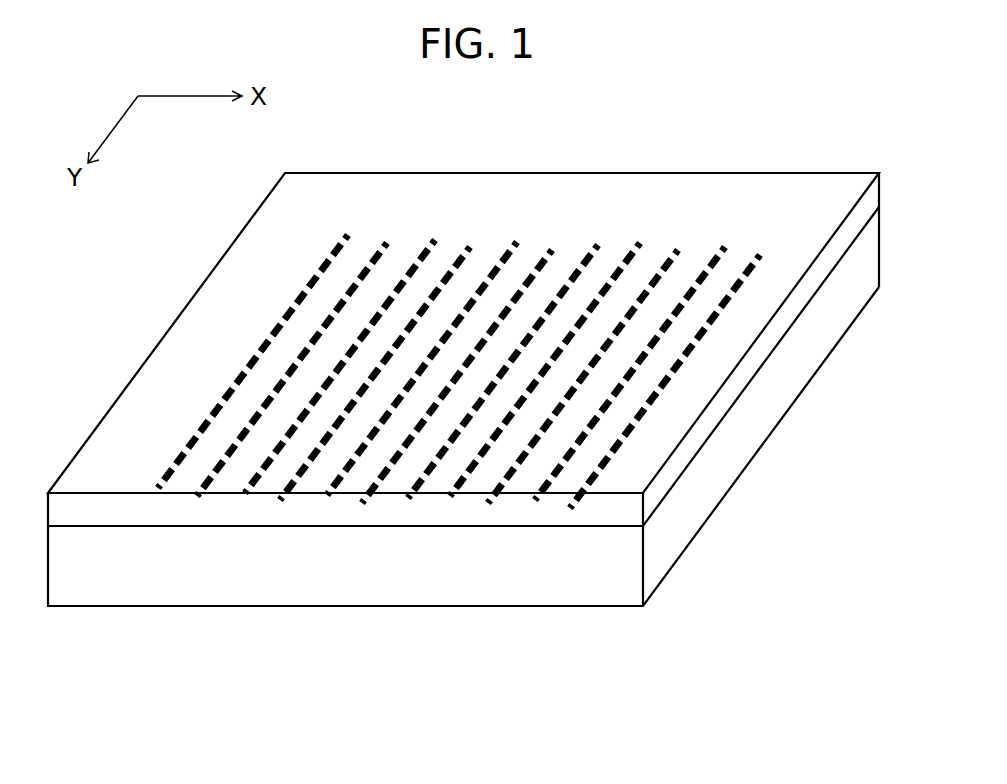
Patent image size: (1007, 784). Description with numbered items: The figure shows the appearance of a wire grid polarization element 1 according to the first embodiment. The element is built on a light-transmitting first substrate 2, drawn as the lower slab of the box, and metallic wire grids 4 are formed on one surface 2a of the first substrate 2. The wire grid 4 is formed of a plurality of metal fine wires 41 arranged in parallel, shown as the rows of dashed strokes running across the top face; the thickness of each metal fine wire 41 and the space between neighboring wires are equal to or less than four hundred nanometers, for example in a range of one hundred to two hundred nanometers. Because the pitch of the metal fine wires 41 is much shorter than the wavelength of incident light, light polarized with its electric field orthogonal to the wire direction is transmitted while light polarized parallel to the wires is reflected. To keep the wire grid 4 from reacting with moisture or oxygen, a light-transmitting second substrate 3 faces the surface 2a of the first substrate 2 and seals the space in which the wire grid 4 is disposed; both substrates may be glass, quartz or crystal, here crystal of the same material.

The wire grid polarization element 1 is at (858, 163).
The first substrate 2 is at (622, 578).
The one surface of the first substrate 2a is at (537, 527).
The second substrate 3 is at (683, 190).
The wire grid 4 is at (350, 413).
The metal fine wire 41 is at (400, 382).